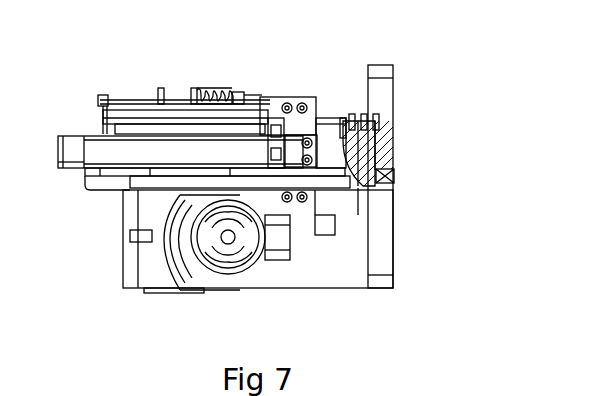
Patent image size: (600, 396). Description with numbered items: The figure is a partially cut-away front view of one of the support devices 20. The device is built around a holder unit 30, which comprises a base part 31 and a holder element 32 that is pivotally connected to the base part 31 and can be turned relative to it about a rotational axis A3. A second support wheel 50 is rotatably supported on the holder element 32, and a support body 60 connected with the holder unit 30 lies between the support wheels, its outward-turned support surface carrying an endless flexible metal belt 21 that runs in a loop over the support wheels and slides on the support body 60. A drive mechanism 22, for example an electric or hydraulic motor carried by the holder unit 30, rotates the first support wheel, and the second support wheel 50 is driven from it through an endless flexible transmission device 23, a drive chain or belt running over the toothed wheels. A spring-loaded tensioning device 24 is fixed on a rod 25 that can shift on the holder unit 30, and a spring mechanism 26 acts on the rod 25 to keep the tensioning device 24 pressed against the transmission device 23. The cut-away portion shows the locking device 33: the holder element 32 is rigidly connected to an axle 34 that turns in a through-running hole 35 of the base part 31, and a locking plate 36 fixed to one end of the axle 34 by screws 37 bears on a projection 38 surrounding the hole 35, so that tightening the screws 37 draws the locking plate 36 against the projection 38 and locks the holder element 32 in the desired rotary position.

The support device 20 is at (94, 242).
The endless flexible metal belt 21 is at (75, 152).
The drive mechanism 22 is at (226, 270).
The endless flexible transmission device 23 is at (246, 112).
The spring-loaded tensioning device 24 is at (104, 108).
The rod 25 is at (173, 100).
The spring mechanism 26 is at (213, 90).
The holder unit 30 is at (402, 68).
The base part 31 is at (318, 115).
The holder element 32 is at (313, 180).
The locking device 33 is at (380, 117).
The axle 34 is at (367, 150).
The through-running hole 35 is at (373, 163).
The locking plate 36 is at (353, 124).
The screws 37 is at (346, 122).
The projection 38 is at (378, 127).
The second support wheel 50 is at (95, 136).
The support body 60 is at (72, 178).
The rotational axis A3 is at (362, 207).